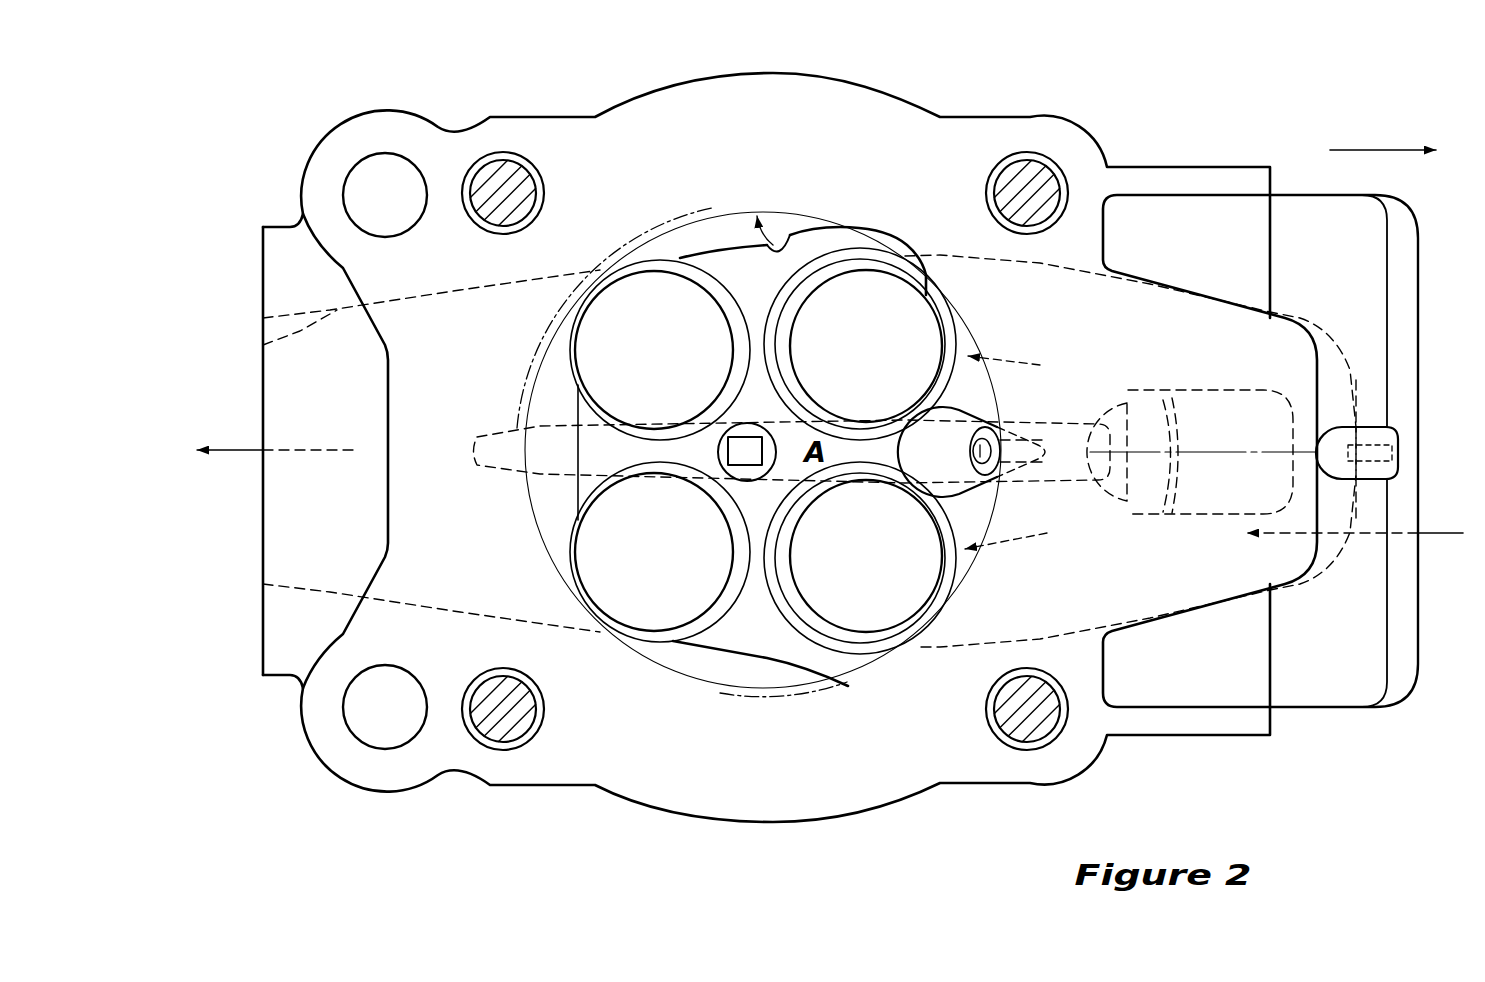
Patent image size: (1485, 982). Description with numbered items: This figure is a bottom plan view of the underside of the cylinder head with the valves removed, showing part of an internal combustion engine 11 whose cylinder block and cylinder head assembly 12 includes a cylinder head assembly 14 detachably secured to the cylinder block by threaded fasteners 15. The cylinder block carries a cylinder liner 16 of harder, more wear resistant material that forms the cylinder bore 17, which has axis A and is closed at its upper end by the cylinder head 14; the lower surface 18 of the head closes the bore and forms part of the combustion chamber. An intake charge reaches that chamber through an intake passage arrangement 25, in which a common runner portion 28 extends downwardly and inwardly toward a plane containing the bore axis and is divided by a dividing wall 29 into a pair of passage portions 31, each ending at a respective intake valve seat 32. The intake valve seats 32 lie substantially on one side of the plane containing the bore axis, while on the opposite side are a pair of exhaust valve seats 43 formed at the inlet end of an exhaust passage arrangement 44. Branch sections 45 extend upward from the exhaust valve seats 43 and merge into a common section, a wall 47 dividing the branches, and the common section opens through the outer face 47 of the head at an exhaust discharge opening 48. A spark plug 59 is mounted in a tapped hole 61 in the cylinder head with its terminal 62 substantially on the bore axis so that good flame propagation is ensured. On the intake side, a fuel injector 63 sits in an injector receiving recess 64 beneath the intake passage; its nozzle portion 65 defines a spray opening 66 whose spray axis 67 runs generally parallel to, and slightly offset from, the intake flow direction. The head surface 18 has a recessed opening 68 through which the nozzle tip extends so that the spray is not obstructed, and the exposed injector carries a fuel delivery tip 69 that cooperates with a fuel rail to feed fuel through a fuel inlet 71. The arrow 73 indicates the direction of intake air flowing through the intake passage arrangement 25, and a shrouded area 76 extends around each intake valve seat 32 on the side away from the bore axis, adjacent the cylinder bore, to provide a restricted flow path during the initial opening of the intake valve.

The internal combustion engine 11 is at (256, 191).
The cylinder block, cylinder head assembly 12 is at (259, 119).
The cylinder head assembly 14 is at (629, 94).
The threaded fasteners 15 is at (492, 183).
The cylinder liner 16 is at (791, 240).
The cylinder bore 17 is at (519, 410).
The lower surface 18 is at (733, 273).
The intake passage arrangement 25 is at (1086, 624).
The common runner portion 28 is at (1340, 562).
The dividing wall 29 is at (1033, 487).
The passage portions 31 is at (862, 280).
The intake valve seats 32 is at (787, 330).
The exhaust valve seats 43 is at (733, 373).
The exhaust passage arrangement 44 is at (355, 416).
The branch sections 45 is at (610, 307).
The wall 47 is at (267, 342).
The exhaust discharge opening 48 is at (287, 580).
The spark plug 59 is at (725, 484).
The tapped hole 61 is at (744, 482).
The terminal 62 is at (756, 468).
The fuel injector 63 is at (1199, 388).
The injector receiving recess 64 is at (1244, 395).
The nozzle portion 65 is at (1057, 423).
The spray opening 66 is at (1040, 393).
The spray axis 67 is at (1230, 460).
The recessed opening 68 is at (948, 492).
The fuel delivery tip 69 is at (1350, 425).
The fuel inlet 71 is at (1393, 455).
The arrow 73 is at (1443, 537).
The shrouded area 76 is at (935, 340).